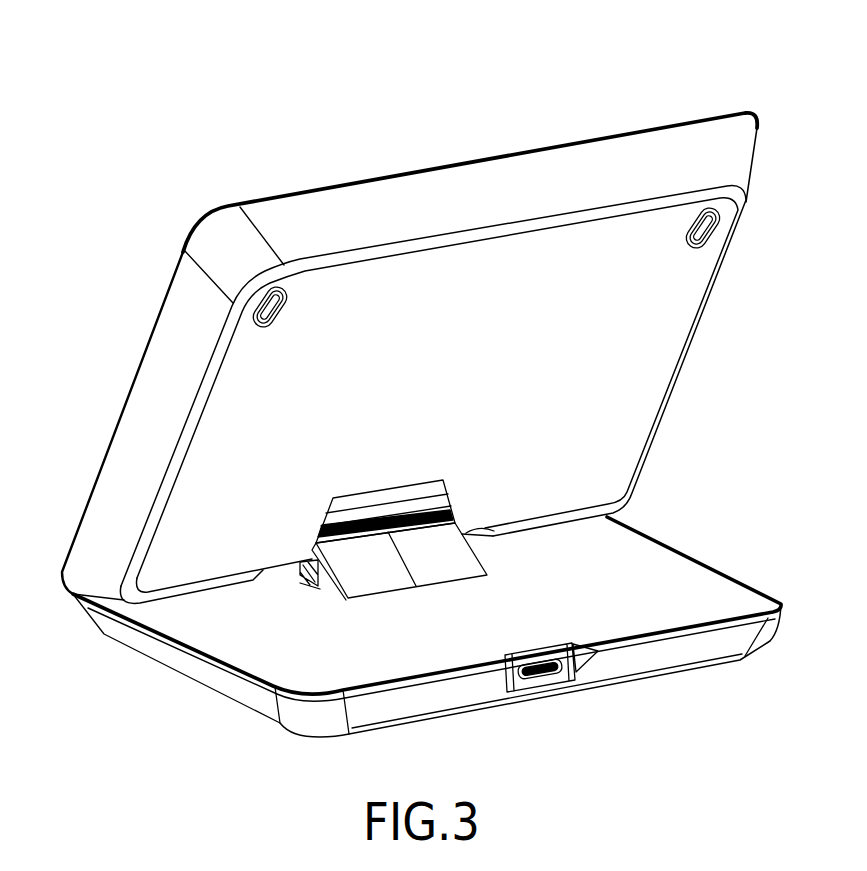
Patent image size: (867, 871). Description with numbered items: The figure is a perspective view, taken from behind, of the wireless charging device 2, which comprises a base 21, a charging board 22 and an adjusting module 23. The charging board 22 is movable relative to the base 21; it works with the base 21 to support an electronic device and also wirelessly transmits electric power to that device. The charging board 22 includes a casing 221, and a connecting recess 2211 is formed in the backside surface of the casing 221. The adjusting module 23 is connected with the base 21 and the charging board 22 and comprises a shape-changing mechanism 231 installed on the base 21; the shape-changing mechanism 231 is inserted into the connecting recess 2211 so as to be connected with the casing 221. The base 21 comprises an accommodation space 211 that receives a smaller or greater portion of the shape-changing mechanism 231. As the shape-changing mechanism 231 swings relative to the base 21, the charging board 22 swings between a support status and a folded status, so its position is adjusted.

The wireless charging device 2 is at (642, 53).
The base 21 is at (686, 568).
The accommodation space 211 is at (298, 576).
The charging board 22 is at (383, 189).
The casing 221 is at (652, 400).
The connecting recess 2211 is at (441, 484).
The adjusting module 23 is at (348, 580).
The shape-changing mechanism 231 is at (440, 570).